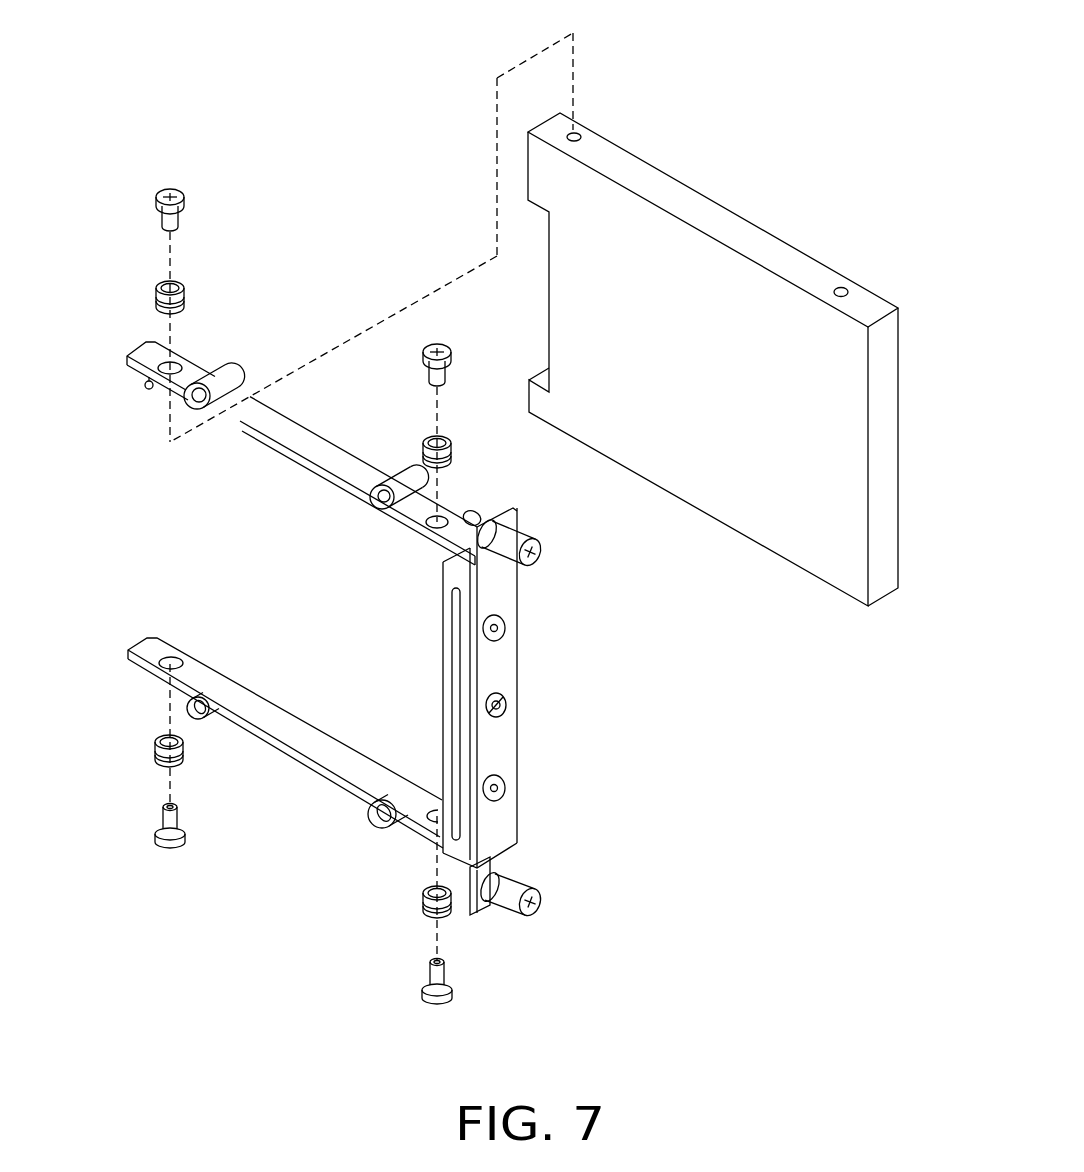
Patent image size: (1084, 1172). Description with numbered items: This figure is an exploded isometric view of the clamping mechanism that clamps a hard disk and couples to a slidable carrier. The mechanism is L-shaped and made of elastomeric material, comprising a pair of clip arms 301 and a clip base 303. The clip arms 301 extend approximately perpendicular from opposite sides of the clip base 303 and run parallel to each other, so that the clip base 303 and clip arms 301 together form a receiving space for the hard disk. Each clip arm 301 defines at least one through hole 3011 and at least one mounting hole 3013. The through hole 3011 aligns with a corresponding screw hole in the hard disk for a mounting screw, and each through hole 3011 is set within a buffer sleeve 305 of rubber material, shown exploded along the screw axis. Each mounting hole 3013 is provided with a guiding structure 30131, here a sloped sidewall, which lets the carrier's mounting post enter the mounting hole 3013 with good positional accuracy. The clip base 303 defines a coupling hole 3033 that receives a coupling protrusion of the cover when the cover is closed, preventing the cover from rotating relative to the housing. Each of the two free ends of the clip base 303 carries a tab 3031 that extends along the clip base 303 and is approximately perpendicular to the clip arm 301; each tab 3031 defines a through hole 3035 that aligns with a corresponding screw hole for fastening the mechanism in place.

The clip arm 301 is at (305, 430).
The clip base 303 is at (497, 672).
The buffer sleeve 305 is at (185, 290).
The through hole 3011 is at (438, 520).
The mounting hole 3013 is at (176, 397).
The tab 3031 is at (520, 867).
The coupling hole 3033 is at (500, 700).
The through hole 3035 is at (527, 516).
The guiding structure 30131 is at (176, 708).